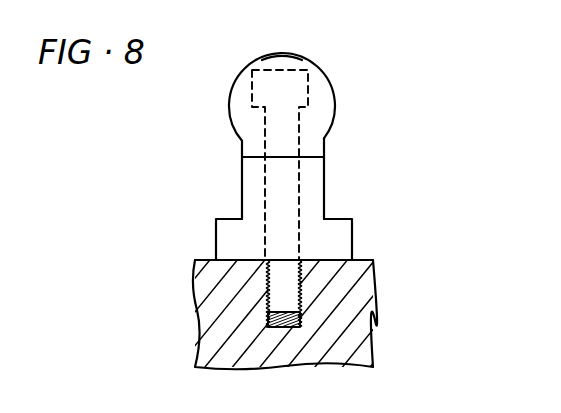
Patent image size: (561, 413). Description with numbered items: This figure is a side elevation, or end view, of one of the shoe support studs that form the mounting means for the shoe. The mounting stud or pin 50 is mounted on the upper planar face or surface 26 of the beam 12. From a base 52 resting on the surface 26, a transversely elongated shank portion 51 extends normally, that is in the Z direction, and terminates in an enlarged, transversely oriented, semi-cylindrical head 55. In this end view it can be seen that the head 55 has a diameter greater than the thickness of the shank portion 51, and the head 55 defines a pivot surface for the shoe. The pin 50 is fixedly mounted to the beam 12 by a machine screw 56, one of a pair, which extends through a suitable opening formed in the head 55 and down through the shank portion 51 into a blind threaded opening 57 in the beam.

The beam 12 is at (358, 323).
The upper planar face or surface 26 is at (370, 258).
The mounting stud or pin 50 is at (332, 183).
The shank portion 51 is at (250, 135).
The base 52 is at (230, 230).
The head 55 is at (322, 93).
The machine screw 56 is at (303, 58).
The blind threaded opening 57 is at (272, 318).